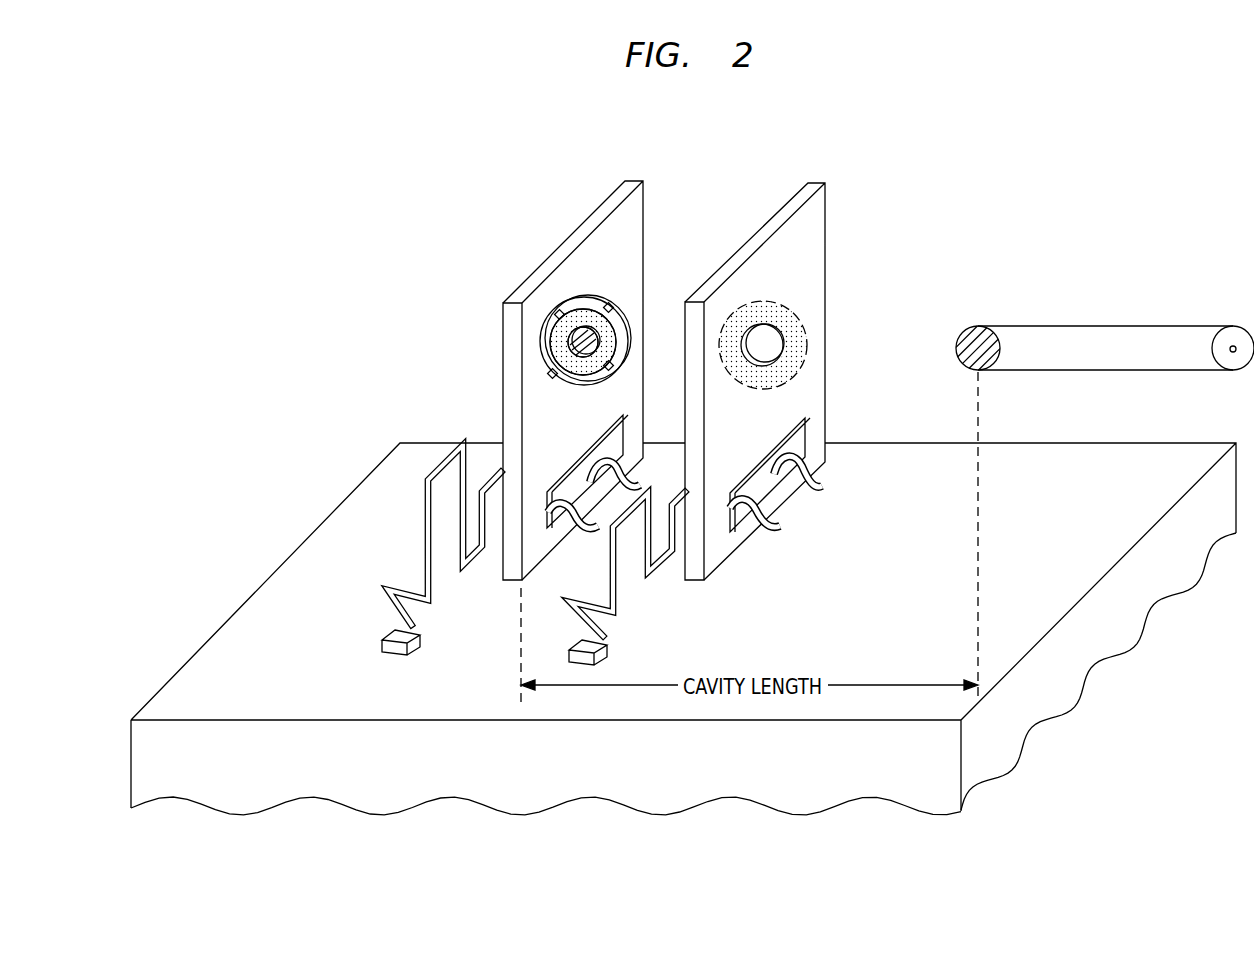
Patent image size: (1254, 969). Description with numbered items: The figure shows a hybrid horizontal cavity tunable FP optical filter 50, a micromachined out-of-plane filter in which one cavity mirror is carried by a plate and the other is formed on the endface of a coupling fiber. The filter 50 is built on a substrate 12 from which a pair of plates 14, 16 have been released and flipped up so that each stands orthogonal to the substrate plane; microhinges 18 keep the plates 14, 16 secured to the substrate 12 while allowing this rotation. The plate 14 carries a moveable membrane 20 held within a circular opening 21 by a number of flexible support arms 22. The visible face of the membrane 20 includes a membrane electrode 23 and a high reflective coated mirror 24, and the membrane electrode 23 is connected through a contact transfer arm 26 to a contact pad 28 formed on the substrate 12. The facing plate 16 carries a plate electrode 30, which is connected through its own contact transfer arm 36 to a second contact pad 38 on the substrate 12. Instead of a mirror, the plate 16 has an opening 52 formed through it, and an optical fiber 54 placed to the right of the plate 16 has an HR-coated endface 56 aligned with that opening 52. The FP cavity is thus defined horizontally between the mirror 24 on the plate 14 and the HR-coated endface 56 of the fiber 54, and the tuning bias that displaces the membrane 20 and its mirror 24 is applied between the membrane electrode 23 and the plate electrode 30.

The substrate 12 is at (834, 774).
The plate 14 is at (626, 230).
The plate 16 is at (805, 243).
The microhinges 18 is at (620, 486).
The moveable membrane 20 is at (584, 294).
The circular opening 21 is at (600, 300).
The flexible support arms 22 is at (558, 312).
The membrane electrode 23 is at (572, 367).
The high reflective coated mirror 24 is at (580, 340).
The contact transfer arm 26 is at (425, 551).
The contact pad 28 is at (395, 638).
The plate electrode 30 is at (800, 306).
The contact transfer arm 36 is at (618, 603).
The contact pad 38 is at (606, 648).
The hybrid horizontal cavity tunable FP optical filter 50 is at (382, 157).
The opening 52 is at (780, 346).
The optical fiber 54 is at (1108, 342).
The HR-coated endface 56 is at (983, 335).